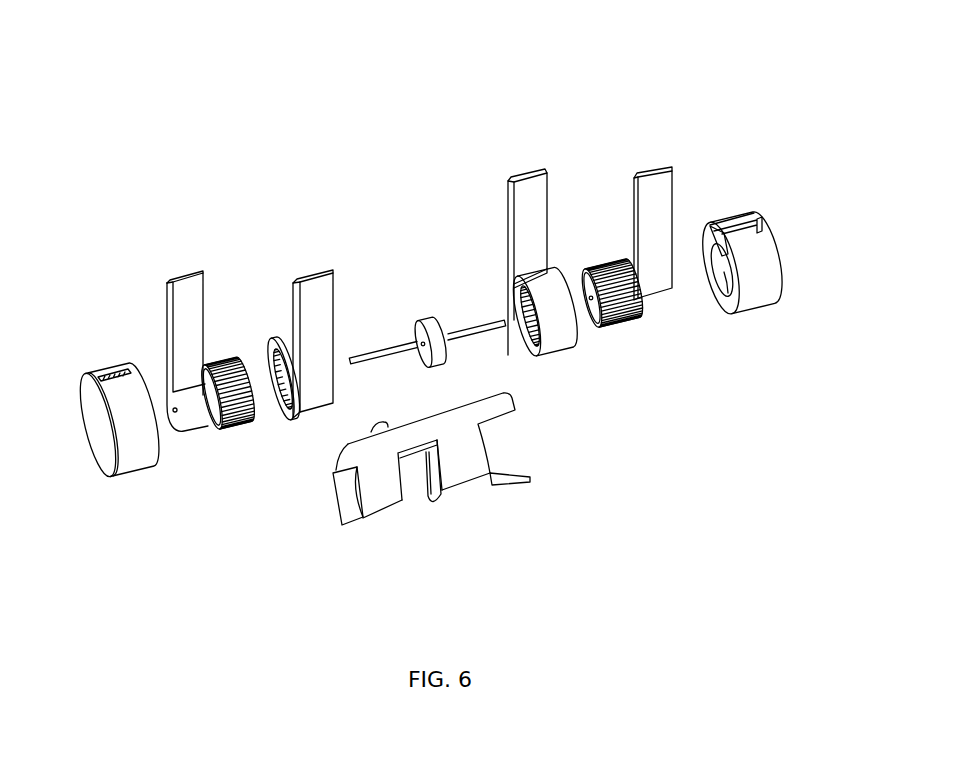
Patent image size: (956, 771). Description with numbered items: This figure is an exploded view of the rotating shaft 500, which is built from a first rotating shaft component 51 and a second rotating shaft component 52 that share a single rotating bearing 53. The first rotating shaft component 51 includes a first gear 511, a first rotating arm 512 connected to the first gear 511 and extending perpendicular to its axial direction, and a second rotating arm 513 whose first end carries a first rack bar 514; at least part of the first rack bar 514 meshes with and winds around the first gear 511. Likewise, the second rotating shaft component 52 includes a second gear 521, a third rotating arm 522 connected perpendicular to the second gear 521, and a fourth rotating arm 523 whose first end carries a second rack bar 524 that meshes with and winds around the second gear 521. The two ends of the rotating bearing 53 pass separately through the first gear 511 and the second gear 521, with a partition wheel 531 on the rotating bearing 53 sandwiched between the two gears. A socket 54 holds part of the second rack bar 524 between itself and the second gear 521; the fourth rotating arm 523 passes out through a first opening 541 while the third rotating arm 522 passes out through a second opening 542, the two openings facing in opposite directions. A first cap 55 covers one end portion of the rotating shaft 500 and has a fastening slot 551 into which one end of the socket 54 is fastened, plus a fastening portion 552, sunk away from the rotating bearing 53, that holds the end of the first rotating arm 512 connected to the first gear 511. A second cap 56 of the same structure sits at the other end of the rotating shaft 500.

The rotating shaft 500 is at (380, 43).
The first rotating shaft component 51 is at (495, 100).
The first gear 511 is at (602, 265).
The first rotating arm 512 is at (657, 210).
The second rotating arm 513 is at (525, 200).
The first rack bar 514 is at (550, 303).
The second rotating shaft component 52 is at (313, 203).
The second gear 521 is at (227, 380).
The third rotating arm 522 is at (175, 307).
The fourth rotating arm 523 is at (307, 297).
The second rack bar 524 is at (273, 347).
The rotating bearing 53 is at (380, 353).
The partition wheel 531 is at (427, 320).
The socket 54 is at (450, 480).
The first opening 541 is at (420, 503).
The second opening 542 is at (355, 434).
The first cap 55 is at (760, 275).
The fastening slot 551 is at (730, 320).
The fastening portion 552 is at (720, 267).
The second cap 56 is at (98, 435).